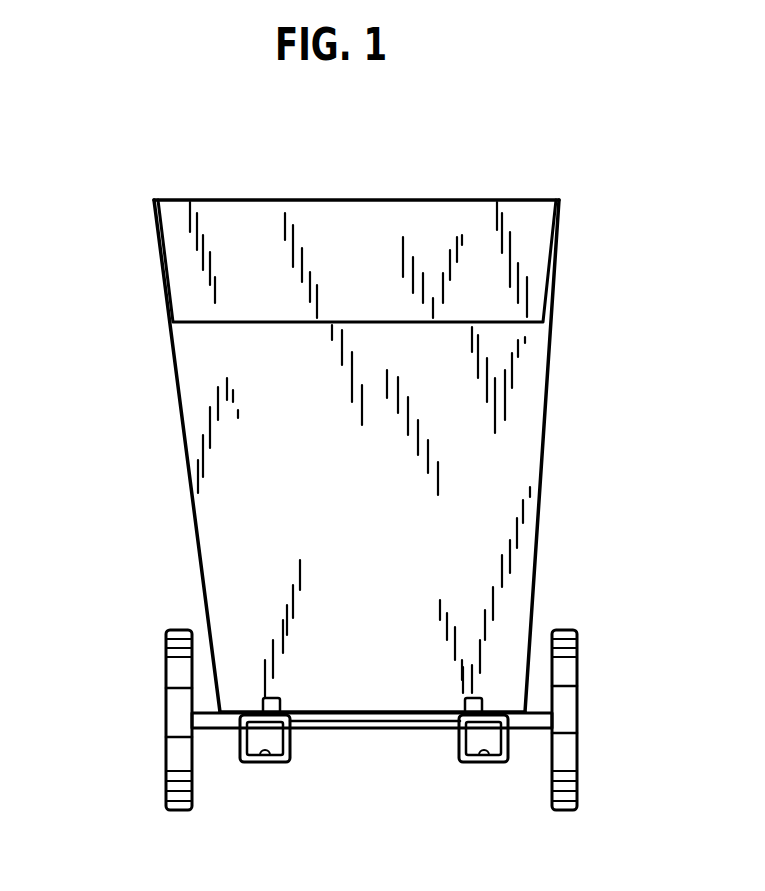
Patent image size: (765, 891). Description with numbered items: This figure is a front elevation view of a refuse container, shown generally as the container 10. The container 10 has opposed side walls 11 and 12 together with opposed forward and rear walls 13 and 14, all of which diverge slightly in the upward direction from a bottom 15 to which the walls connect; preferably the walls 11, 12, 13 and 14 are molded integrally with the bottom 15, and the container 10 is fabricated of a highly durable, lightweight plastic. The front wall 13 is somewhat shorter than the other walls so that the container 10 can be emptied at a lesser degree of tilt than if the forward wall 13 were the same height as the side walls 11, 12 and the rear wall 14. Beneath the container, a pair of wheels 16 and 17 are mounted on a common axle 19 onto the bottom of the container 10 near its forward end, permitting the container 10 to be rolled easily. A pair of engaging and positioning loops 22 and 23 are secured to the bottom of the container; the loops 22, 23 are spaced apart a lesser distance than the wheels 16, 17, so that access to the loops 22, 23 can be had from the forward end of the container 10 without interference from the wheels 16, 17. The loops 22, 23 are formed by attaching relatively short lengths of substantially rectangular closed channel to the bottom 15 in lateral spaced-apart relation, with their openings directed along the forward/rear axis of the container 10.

The container 10 is at (88, 243).
The side wall 11 is at (547, 400).
The side wall 12 is at (179, 410).
The forward wall 13 is at (380, 512).
The rear wall 14 is at (334, 222).
The bottom 15 is at (333, 731).
The wheel 16 is at (565, 693).
The wheel 17 is at (180, 705).
The axle 19 is at (313, 733).
The engaging and positioning loop 22 is at (490, 763).
The engaging and positioning loop 23 is at (250, 762).